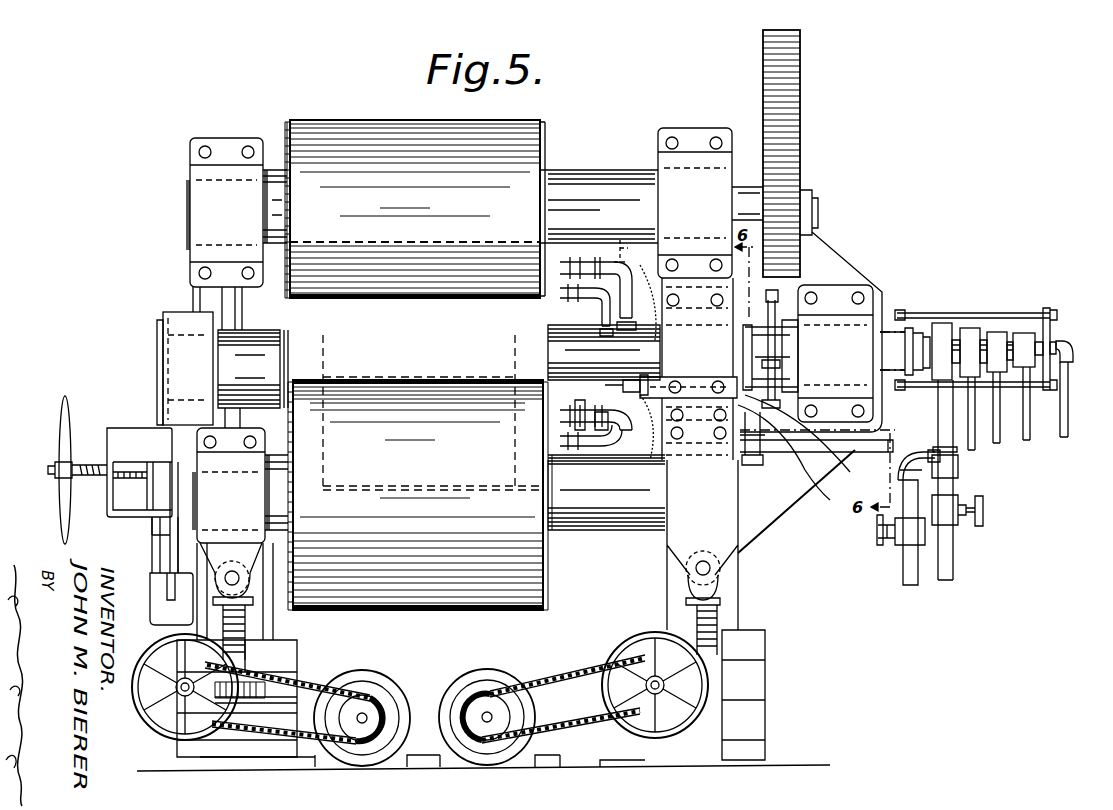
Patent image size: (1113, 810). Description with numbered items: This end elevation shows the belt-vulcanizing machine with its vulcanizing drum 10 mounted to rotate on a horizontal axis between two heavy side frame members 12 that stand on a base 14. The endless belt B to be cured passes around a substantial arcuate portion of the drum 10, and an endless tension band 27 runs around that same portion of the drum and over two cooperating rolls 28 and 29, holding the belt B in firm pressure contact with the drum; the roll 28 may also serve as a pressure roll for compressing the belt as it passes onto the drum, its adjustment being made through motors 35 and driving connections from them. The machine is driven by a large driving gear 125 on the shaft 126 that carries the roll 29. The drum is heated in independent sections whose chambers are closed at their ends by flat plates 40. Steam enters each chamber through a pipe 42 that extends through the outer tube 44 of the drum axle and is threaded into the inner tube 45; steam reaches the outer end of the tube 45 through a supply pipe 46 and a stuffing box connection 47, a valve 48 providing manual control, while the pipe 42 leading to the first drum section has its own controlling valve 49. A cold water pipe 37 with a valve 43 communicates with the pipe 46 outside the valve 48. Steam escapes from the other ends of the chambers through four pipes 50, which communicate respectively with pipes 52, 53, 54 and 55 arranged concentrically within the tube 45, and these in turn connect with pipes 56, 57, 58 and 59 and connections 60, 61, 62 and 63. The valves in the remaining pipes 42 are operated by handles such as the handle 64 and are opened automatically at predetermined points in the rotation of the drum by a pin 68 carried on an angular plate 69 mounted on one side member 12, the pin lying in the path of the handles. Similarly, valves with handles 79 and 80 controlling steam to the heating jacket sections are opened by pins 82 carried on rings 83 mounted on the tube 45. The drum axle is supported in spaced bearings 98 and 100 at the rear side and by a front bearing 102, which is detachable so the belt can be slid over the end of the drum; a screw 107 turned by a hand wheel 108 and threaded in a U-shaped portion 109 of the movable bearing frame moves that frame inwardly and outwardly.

The vulcanizing drum 10 is at (433, 411).
The side frame members 12 is at (268, 628).
The base 14 is at (745, 757).
The endless tension band 27 is at (508, 120).
The roll 28 is at (548, 602).
The roll 29 is at (290, 122).
The motors 35 is at (458, 688).
The cold water pipe 37 is at (900, 555).
The flat plates 40 is at (290, 345).
The pipe 42 is at (587, 262).
The valve 43 is at (878, 532).
The outer tube 44 is at (845, 462).
The inner tube 45 is at (890, 368).
The supply pipe 46 is at (940, 436).
The stuffing box connection 47 is at (940, 330).
The valve 48 is at (985, 504).
The controlling valve 49 is at (615, 446).
The pipes 50 is at (590, 300).
The pipe 52 is at (968, 330).
The pipe 53 is at (994, 332).
The pipe 54 is at (1020, 333).
The pipe 55 is at (1056, 342).
The pipe 56 is at (975, 447).
The pipe 57 is at (1000, 442).
The pipe 58 is at (1030, 438).
The pipe 59 is at (1068, 434).
The connection 60 is at (970, 330).
The connection 61 is at (1003, 332).
The connection 62 is at (1028, 333).
The connection 63 is at (1073, 350).
The valve handle 64 is at (625, 232).
The pin 68 is at (630, 380).
The angular plate 69 is at (656, 378).
The valve handle 79 is at (808, 498).
The valve handle 80 is at (815, 472).
The pins 82 is at (770, 328).
The rings 83 is at (770, 368).
The bearing 98 is at (811, 332).
The bearing 100 is at (695, 294).
The front bearing 102 is at (168, 322).
The screw 107 is at (88, 440).
The hand wheel 108 is at (60, 430).
The U-shaped portion 109 is at (115, 520).
The driving gear 125 is at (800, 100).
The shaft 126 is at (752, 182).
The endless belt B is at (352, 372).